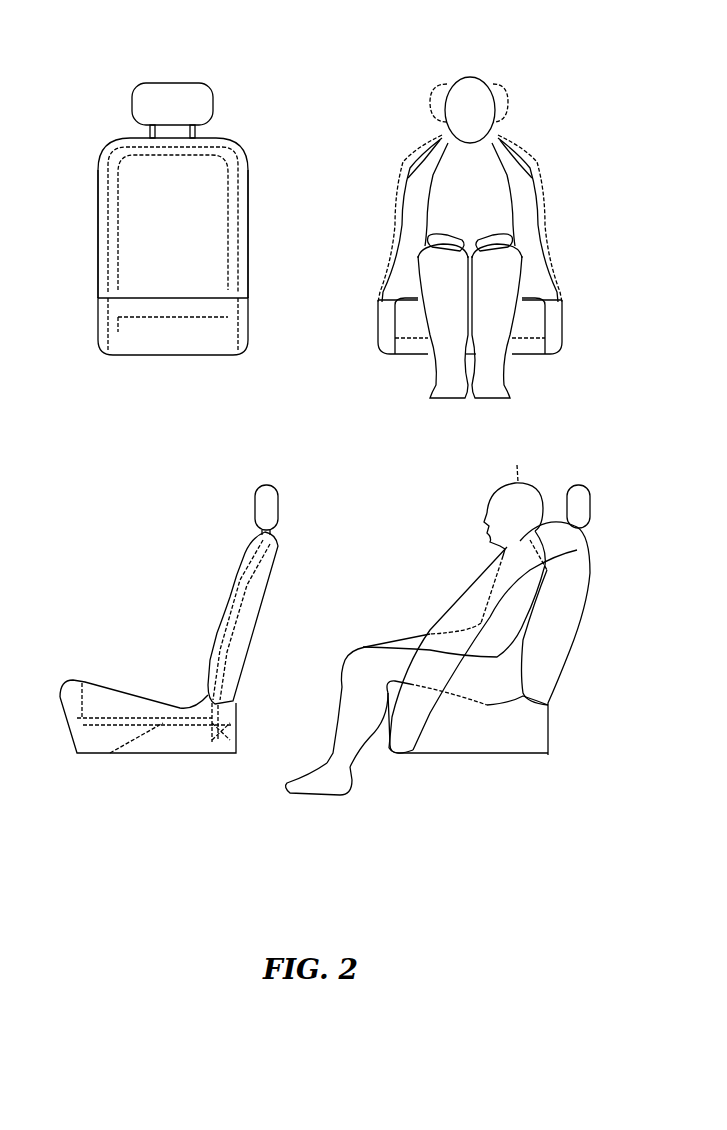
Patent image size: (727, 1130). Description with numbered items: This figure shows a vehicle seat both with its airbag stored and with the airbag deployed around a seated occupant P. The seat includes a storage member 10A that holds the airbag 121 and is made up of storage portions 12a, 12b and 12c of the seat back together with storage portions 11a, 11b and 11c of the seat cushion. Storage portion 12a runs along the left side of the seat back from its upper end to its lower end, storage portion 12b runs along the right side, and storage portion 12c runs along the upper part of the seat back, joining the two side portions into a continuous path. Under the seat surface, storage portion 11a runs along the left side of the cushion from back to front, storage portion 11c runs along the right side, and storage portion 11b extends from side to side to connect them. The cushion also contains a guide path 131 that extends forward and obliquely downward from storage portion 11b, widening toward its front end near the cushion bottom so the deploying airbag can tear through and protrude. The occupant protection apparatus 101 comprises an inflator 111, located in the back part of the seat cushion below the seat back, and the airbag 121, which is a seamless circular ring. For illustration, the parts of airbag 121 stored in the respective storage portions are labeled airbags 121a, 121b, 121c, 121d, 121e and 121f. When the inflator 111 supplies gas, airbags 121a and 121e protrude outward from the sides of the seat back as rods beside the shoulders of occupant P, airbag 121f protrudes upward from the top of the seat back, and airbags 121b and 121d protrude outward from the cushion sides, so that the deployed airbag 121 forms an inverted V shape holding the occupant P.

The storage member 10A is at (173, 219).
The storage portion 11a is at (240, 305).
The storage portion 11b is at (117, 330).
The storage portion 11c is at (117, 317).
The storage portion 12a is at (238, 223).
The storage portion 12b is at (98, 223).
The storage portion 12c is at (127, 133).
The occupant protection apparatus 101 is at (450, 411).
The inflator 111 is at (240, 728).
The airbag 121 is at (470, 235).
The airbag 121a is at (527, 232).
The airbag 121b is at (547, 327).
The airbag 121c is at (408, 348).
The airbag 121d is at (385, 325).
The airbag 121e is at (408, 232).
The airbag 121f is at (447, 133).
The guide path 131 is at (172, 619).
The occupant P is at (470, 76).